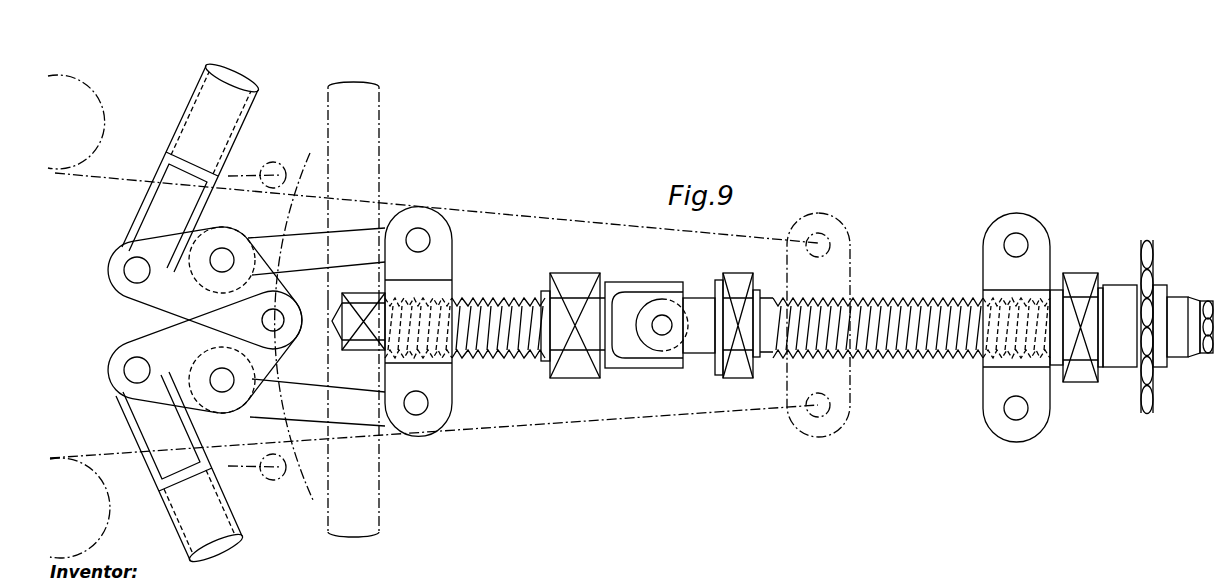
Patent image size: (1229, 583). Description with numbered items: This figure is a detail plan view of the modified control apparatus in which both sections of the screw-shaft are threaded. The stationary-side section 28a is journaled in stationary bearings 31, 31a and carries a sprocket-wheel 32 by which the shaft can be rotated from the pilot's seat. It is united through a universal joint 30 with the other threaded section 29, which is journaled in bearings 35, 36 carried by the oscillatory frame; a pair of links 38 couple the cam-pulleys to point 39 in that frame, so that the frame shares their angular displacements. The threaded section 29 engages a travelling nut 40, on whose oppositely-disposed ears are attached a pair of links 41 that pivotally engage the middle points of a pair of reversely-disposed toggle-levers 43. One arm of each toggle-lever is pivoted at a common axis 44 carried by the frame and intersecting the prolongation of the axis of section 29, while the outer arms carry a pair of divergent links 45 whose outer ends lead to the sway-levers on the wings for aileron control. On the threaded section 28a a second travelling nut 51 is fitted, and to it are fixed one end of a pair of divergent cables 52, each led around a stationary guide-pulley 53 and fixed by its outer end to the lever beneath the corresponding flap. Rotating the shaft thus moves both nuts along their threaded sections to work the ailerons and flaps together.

The threaded screw-shaft section 28a is at (920, 298).
The threaded screw-shaft section 29 is at (504, 297).
The universal joint 30 is at (663, 322).
The stationary bearing 31 is at (1080, 280).
The stationary bearing 31a is at (743, 284).
The sprocket-wheel 32 is at (1154, 250).
The bearing 35 is at (580, 285).
The bearing 36 is at (382, 293).
The link 38 is at (372, 475).
The point in the frame 39 is at (328, 336).
The travelling nut 40 is at (449, 373).
The link 41 is at (323, 400).
The toggle-lever 43 is at (123, 341).
The common axis 44 is at (277, 314).
The divergent link 45 is at (228, 500).
The travelling nut 51 is at (850, 394).
The divergent cable 52 is at (606, 418).
The stationary guide-pulley 53 is at (104, 503).